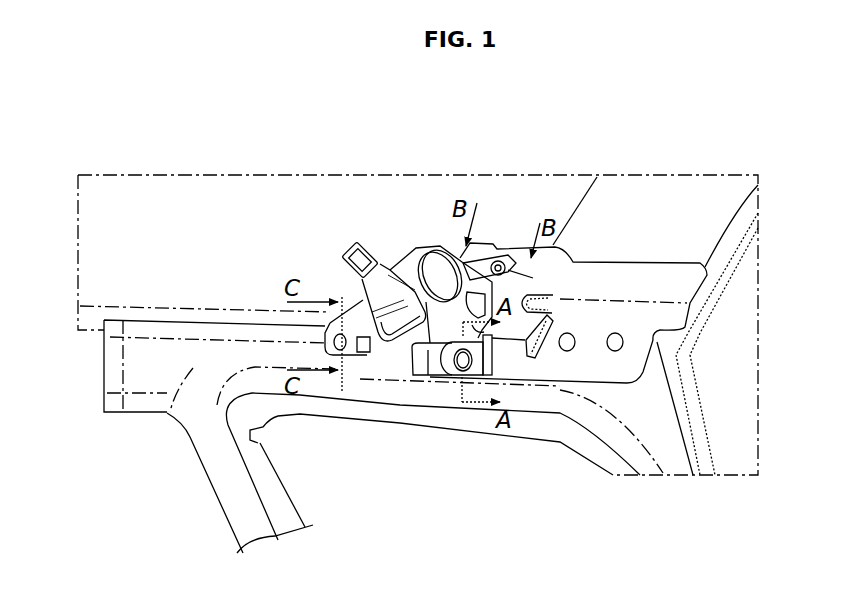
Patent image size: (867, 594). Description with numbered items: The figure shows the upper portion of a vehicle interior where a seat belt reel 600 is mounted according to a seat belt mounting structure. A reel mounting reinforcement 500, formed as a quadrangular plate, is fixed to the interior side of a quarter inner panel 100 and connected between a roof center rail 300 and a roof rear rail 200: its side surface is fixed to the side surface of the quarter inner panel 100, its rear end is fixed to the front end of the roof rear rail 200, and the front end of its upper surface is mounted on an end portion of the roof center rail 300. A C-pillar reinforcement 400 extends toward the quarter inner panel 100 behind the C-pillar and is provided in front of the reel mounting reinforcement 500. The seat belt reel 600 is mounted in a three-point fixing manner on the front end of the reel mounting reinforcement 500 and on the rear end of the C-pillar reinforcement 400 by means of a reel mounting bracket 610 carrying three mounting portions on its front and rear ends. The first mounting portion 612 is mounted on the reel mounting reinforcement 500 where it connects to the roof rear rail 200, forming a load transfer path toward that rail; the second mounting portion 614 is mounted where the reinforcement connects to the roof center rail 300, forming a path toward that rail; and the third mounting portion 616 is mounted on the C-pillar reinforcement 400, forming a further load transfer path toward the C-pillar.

The quarter inner panel 100 is at (540, 402).
The roof rear rail 200 is at (718, 321).
The roof center rail 300 is at (547, 198).
The C-pillar reinforcement 400 is at (168, 440).
The reel mounting reinforcement 500 is at (595, 360).
The seat belt reel 600 is at (393, 258).
The reel mounting bracket 610 is at (428, 377).
The first mounting portion 612 is at (472, 380).
The second mounting portion 614 is at (483, 252).
The third mounting portion 616 is at (352, 325).